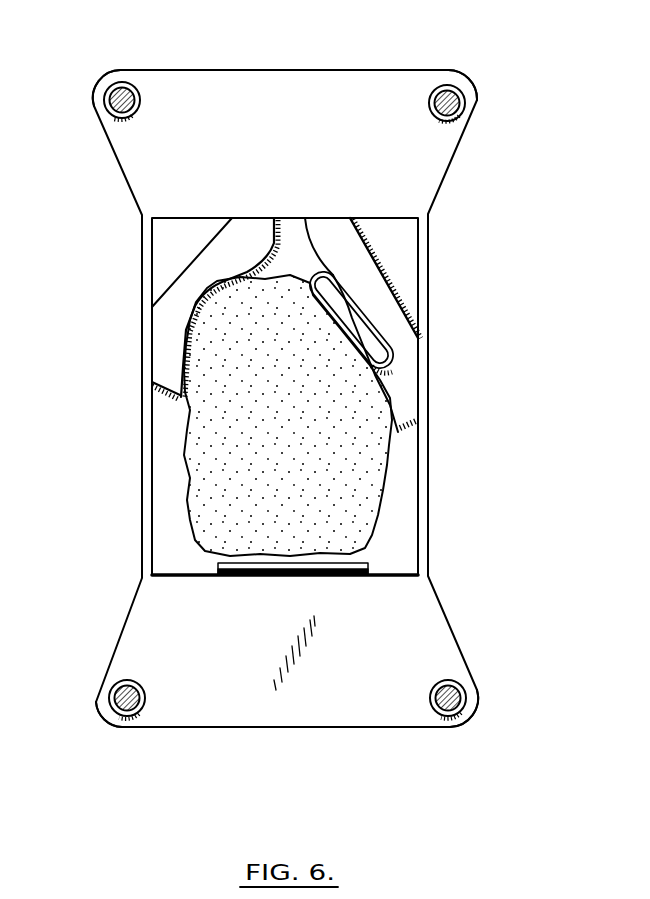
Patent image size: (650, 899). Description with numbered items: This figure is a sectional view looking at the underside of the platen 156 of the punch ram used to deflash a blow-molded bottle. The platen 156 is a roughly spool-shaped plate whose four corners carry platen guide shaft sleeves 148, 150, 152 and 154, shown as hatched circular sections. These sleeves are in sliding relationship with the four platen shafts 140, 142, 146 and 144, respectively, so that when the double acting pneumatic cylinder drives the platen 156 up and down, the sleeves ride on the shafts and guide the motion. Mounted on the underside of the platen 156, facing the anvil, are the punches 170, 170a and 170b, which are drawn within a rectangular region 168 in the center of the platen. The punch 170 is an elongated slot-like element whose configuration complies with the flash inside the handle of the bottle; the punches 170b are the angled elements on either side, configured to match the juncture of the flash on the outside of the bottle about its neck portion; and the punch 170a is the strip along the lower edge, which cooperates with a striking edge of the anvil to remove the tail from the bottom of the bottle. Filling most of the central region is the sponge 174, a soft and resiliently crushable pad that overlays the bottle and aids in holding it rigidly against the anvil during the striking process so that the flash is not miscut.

The platen shaft 140 is at (462, 112).
The platen shaft 142 is at (473, 688).
The platen shaft 144 is at (146, 695).
The platen shaft 146 is at (143, 101).
The platen guide shaft sleeve 148 is at (455, 90).
The platen guide shaft sleeve 150 is at (430, 697).
The platen guide shaft sleeve 152 is at (122, 82).
The platen guide shaft sleeve 154 is at (105, 712).
The platen 156 is at (300, 114).
The window opening 168 is at (404, 519).
The punch 170 is at (343, 308).
The punch 170a is at (320, 576).
The punch 170b is at (477, 302).
The sponge 174 is at (299, 432).